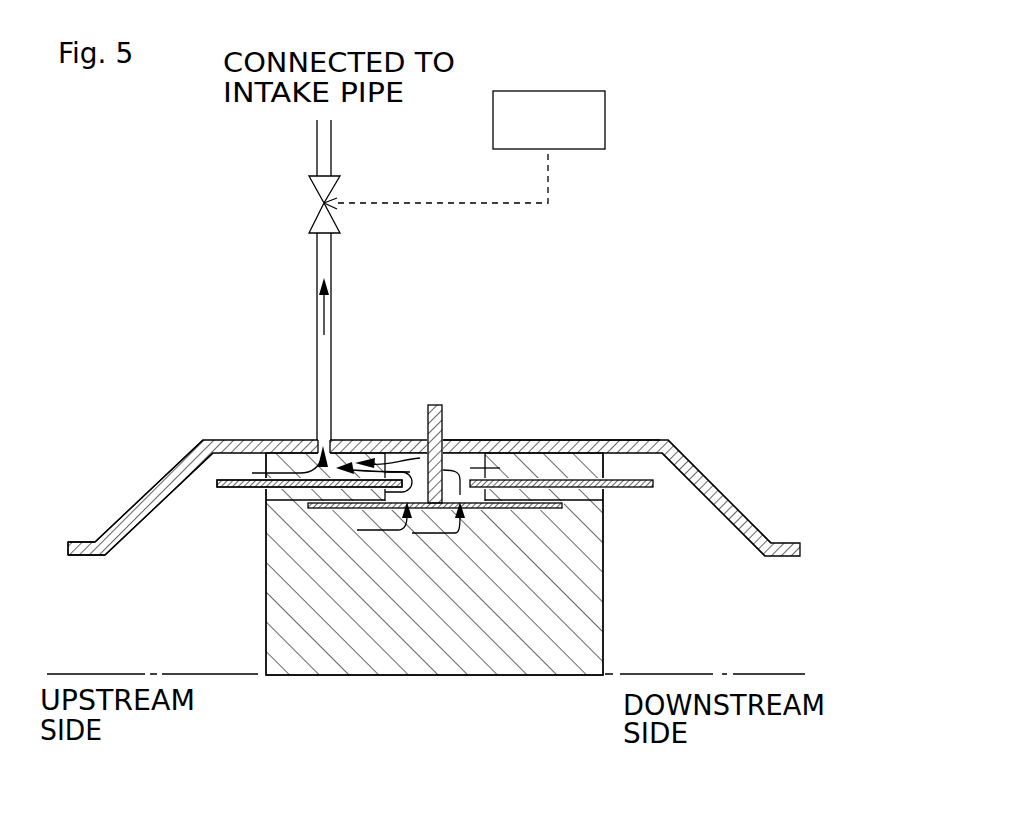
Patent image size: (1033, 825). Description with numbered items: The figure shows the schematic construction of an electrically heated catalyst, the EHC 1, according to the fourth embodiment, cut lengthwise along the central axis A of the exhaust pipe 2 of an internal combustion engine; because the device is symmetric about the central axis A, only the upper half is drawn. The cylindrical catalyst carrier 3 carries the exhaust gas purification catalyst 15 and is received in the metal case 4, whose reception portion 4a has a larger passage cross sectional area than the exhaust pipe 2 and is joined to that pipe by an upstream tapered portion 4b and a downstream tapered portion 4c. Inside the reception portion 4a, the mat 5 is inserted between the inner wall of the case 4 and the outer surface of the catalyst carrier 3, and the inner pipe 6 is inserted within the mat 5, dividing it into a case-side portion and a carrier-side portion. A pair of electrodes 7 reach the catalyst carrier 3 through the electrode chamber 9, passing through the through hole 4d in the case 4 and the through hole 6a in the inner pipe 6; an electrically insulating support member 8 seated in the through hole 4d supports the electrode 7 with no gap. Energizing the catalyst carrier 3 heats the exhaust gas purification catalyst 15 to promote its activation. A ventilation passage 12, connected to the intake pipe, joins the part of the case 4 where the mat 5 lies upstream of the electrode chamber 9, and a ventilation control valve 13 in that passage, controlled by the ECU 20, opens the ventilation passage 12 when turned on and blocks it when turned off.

The EHC 1 is at (704, 336).
The exhaust pipe 2 is at (78, 542).
The catalyst carrier 3 is at (266, 604).
The case 4 is at (240, 440).
The reception portion 4a is at (585, 440).
The tapered portion 4b is at (158, 485).
The tapered portion 4c is at (718, 488).
The through hole 4d is at (455, 440).
The mat 5 is at (581, 496).
The inner pipe 6 is at (232, 488).
The through hole 6a is at (490, 476).
The electrode 7 is at (435, 405).
The support member 8 is at (447, 440).
The electrode chamber 9 is at (392, 440).
The ventilation passage 12 is at (317, 350).
The ventilation control valve 13 is at (333, 188).
The exhaust gas purification catalyst 15 is at (600, 608).
The ECU 20 is at (549, 91).
The central axis A is at (698, 674).